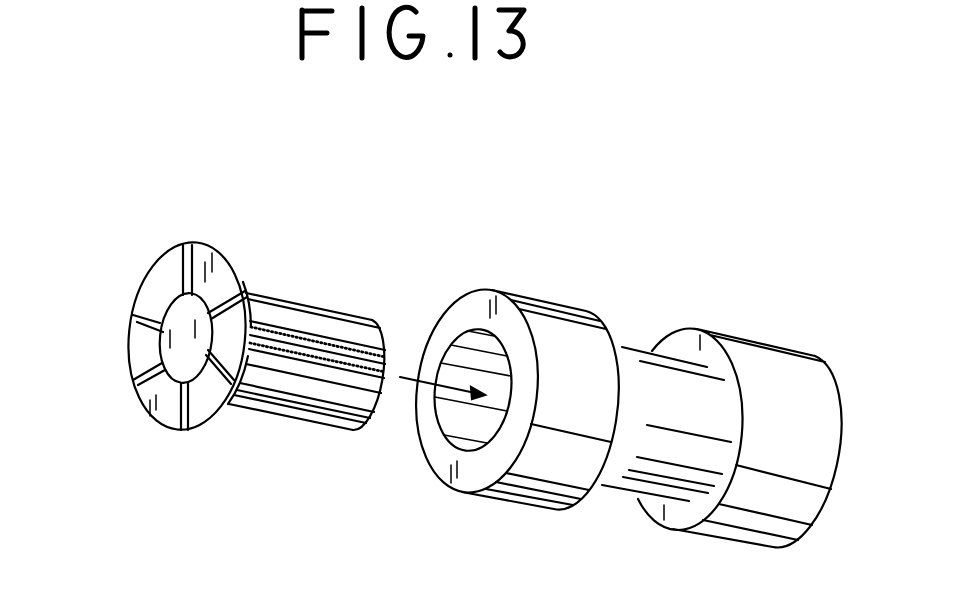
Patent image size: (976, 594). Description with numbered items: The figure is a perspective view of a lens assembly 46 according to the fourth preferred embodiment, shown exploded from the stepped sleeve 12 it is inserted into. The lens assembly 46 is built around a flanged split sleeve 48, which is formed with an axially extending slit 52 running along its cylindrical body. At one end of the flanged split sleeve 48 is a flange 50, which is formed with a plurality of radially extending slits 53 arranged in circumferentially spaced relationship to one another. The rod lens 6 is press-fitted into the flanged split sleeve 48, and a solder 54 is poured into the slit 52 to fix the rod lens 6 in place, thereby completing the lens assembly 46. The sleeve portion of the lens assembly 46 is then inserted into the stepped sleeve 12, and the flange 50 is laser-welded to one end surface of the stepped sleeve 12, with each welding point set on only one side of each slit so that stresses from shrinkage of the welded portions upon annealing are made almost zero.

The stepped sleeve 12 is at (568, 327).
The lens assembly 46 is at (272, 291).
The flanged split sleeve 48 is at (354, 314).
The flange 50 is at (162, 279).
The axially extending slit 52 is at (378, 322).
The radially extending slits 53 is at (140, 320).
The solder 54 is at (298, 332).
The rod lens 6 is at (148, 402).